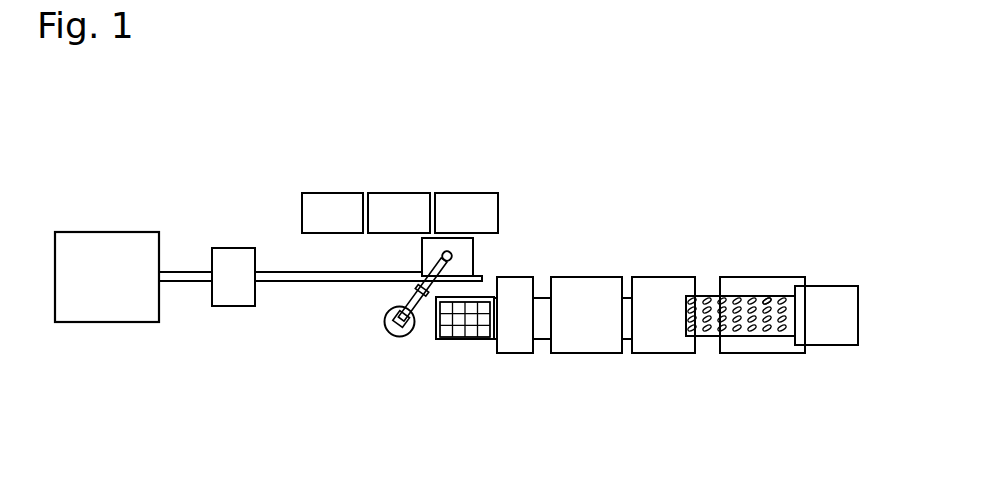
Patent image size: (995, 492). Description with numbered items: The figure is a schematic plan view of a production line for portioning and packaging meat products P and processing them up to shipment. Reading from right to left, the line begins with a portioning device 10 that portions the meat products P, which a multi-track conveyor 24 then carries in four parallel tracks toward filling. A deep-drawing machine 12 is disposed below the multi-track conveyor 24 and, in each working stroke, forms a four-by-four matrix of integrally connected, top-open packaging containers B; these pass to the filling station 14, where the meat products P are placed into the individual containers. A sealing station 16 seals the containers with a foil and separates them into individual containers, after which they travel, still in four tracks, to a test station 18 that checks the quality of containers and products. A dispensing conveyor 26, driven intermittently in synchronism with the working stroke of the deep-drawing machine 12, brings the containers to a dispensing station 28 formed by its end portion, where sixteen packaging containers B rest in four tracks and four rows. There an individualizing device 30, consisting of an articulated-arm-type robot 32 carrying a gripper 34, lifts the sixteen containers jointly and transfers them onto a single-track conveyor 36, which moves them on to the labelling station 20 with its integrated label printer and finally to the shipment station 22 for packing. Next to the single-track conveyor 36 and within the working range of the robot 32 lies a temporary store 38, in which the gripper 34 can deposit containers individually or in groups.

The portioning device 10 is at (842, 330).
The deep-drawing machine 12 is at (757, 348).
The filling station 14 is at (665, 354).
The sealing station 16 is at (590, 352).
The test station 18 is at (518, 352).
The labelling station 20 is at (238, 297).
The shipment station 22 is at (102, 312).
The multi-track conveyor 24 is at (710, 292).
The dispensing conveyor 26 is at (540, 300).
The dispensing station 28 is at (460, 340).
The individualizing device 30 is at (390, 370).
The articulated-arm-type robot 32 is at (387, 322).
The gripper 34 is at (463, 247).
The single-track conveyor 36 is at (282, 271).
The temporary store 38 is at (393, 177).
The packaging containers B is at (443, 334).
The meat products P is at (768, 300).